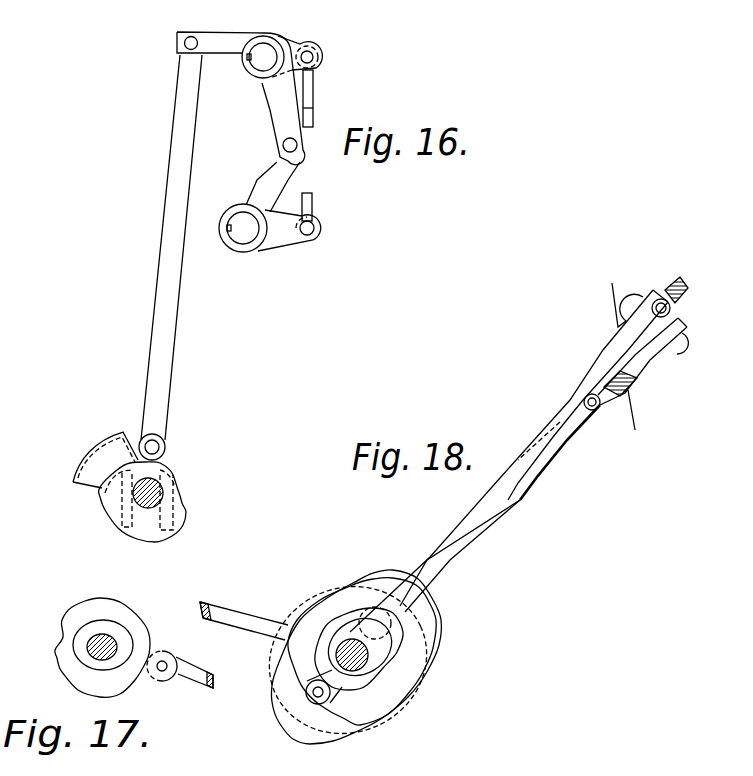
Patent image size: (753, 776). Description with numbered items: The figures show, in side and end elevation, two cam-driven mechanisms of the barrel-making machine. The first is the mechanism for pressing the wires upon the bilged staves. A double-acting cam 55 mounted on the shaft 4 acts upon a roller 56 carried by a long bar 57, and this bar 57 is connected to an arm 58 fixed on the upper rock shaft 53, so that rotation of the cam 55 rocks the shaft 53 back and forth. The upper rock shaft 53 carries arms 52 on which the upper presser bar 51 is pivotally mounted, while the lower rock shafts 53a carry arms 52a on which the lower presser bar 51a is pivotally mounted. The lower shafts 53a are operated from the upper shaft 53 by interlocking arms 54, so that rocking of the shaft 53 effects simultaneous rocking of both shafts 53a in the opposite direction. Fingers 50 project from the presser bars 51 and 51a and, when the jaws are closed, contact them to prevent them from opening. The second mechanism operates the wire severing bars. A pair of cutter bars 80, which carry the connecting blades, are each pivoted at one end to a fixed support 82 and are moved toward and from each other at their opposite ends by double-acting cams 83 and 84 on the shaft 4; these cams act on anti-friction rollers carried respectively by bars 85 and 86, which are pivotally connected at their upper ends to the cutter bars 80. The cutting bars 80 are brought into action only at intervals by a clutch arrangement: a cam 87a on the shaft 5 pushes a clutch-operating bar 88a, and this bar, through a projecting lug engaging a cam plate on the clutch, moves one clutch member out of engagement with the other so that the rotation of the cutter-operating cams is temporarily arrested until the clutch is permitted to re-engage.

In FIG. 16, the shaft 4 is at (135, 497).
In FIG. 17, the shaft 5 is at (103, 640).
In FIG. 16, the fingers 50 is at (312, 202).
In FIG. 16, the upper presser bar 51 is at (313, 69).
In FIG. 16, the lower presser bar 51a is at (307, 210).
In FIG. 16, the arms 52 is at (293, 45).
In FIG. 16, the arms 52a is at (283, 237).
In FIG. 16, the upper rock shaft 53 is at (263, 57).
In FIG. 16, the lower rock shafts 53a is at (245, 237).
In FIG. 16, the interlocking arms 54 is at (263, 181).
In FIG. 16, the double-acting cam 55 is at (185, 512).
In FIG. 16, the roller 56 is at (158, 442).
In FIG. 16, the bar 57 is at (166, 285).
In FIG. 16, the arm 58 is at (234, 44).
In FIG. 18, the cutter bars 80 is at (610, 394).
In FIG. 18, the fixed support 82 is at (687, 328).
In FIG. 18, the double-acting cam 83 is at (293, 718).
In FIG. 18, the double-acting cam 84 is at (420, 615).
In FIG. 18, the bar 85 is at (555, 438).
In FIG. 18, the bar 86 is at (570, 398).
In FIG. 17, the cam 87a is at (72, 681).
In FIG. 17, the clutch operating bar 88a is at (195, 683).
In FIG. 18, the clutch operating bar 88a is at (235, 615).